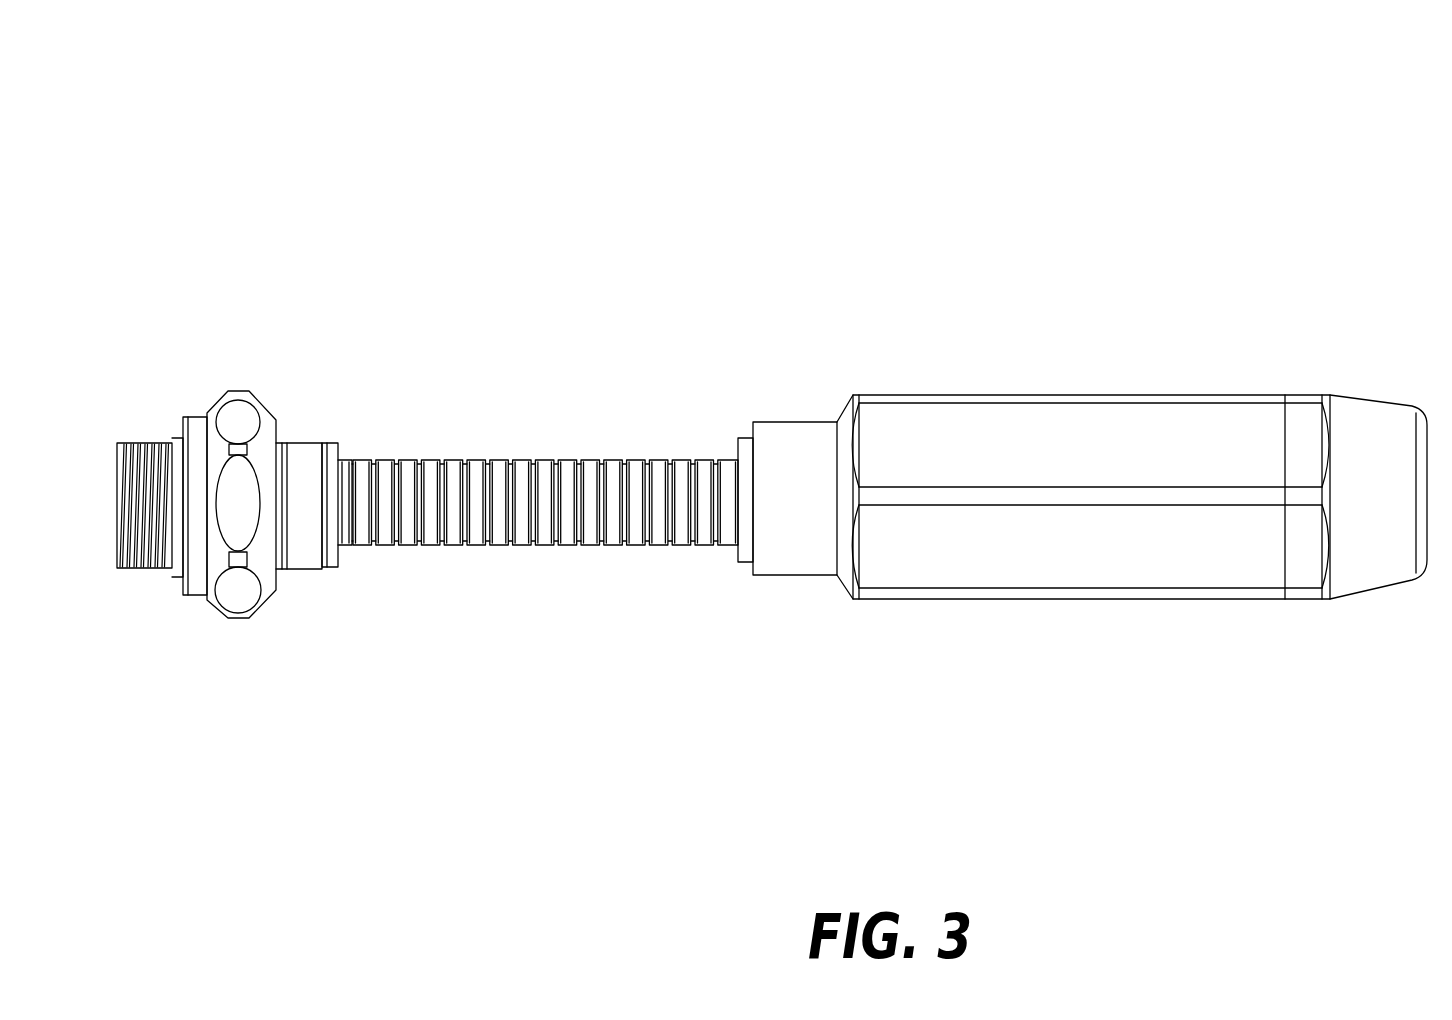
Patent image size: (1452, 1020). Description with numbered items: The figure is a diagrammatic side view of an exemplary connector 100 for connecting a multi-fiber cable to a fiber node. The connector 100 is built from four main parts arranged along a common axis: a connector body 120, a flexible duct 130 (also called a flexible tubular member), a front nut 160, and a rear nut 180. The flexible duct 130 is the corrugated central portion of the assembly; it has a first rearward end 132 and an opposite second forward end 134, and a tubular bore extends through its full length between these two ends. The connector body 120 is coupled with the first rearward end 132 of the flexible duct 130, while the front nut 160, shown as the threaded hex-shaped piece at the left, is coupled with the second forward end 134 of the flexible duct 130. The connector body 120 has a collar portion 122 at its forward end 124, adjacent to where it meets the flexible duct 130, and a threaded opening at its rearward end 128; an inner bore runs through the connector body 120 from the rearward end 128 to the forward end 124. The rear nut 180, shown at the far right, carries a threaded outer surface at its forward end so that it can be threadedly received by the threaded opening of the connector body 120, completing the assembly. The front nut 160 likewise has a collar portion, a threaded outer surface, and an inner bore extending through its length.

The connector 100 is at (1030, 135).
The connector body 120 is at (1007, 412).
The collar portion 122 is at (787, 577).
The forward end 124 is at (782, 348).
The rearward end 128 is at (1251, 357).
The flexible duct 130 is at (545, 463).
The first rearward end 132 is at (727, 562).
The second forward end 134 is at (350, 570).
The front nut 160 is at (242, 617).
The rear nut 180 is at (1365, 588).